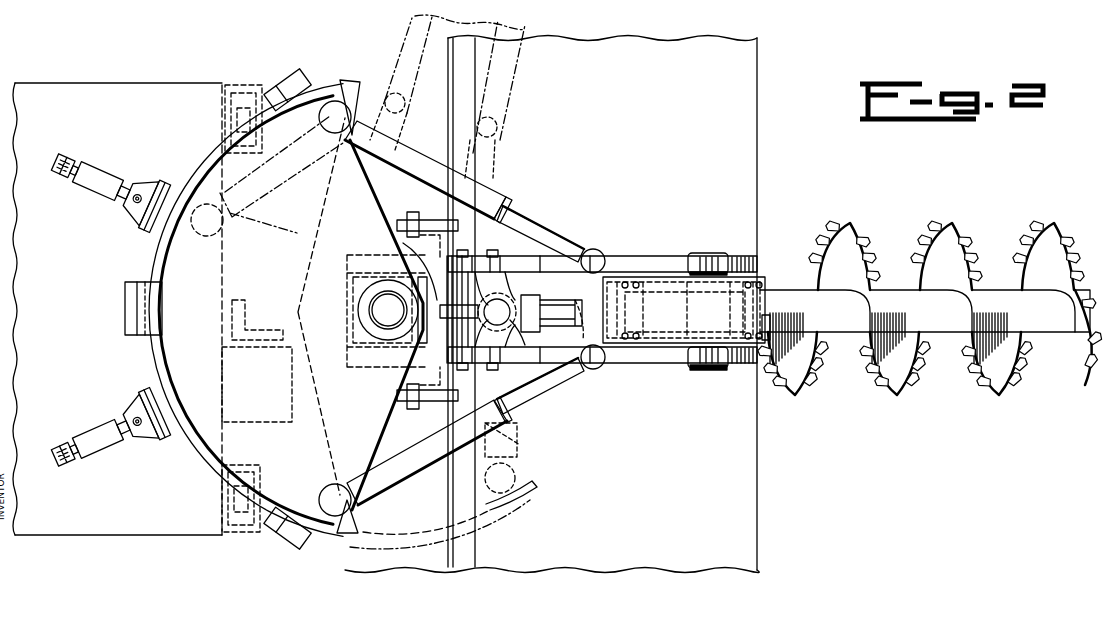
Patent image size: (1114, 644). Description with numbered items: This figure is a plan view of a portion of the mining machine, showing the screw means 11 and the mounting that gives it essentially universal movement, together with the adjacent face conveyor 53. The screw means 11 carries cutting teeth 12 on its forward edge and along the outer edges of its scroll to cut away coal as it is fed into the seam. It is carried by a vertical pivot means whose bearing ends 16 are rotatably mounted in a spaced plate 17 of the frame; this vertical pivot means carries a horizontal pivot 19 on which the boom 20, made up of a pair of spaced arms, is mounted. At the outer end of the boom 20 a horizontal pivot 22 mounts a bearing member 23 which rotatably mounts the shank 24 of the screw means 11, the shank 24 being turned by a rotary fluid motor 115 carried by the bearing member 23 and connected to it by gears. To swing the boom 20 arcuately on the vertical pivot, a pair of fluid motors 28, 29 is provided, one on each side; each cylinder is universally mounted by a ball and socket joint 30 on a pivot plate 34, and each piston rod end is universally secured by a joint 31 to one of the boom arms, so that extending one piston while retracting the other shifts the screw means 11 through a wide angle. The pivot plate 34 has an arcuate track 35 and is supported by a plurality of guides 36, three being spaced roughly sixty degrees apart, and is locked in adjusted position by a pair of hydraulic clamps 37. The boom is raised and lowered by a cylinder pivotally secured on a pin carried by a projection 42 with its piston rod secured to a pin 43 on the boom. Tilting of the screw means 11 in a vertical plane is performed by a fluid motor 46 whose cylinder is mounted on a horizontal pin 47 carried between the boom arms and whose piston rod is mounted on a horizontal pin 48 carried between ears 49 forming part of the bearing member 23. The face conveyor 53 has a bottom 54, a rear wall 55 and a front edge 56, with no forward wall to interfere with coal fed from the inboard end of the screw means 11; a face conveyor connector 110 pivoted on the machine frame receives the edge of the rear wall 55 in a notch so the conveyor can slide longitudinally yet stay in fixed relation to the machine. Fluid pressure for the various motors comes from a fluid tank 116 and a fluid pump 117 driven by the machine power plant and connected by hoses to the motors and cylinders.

The screw means 11 is at (950, 248).
The cutting teeth 12 is at (1040, 250).
The bearing ends 16 is at (375, 311).
The spaced plate 17 is at (380, 9).
The horizontal pivot 19 is at (367, 254).
The boom 20 is at (395, 50).
The horizontal pivot 22 is at (712, 372).
The bearing member 23 is at (675, 340).
The shank 24 is at (675, 283).
The fluid motor 28 is at (415, 468).
The fluid motor 29 is at (415, 150).
The ball and socket joint 30 is at (333, 102).
The joint 31 is at (392, 95).
The pivot plate 34 is at (215, 182).
The arcuate track 35 is at (213, 155).
The guides 36 is at (285, 78).
The hydraulic clamps 37 is at (150, 225).
The projection 42 is at (431, 292).
The pin 43 is at (470, 280).
The fluid motor 46 is at (488, 303).
The horizontal pin 47 is at (500, 268).
The horizontal pin 48 is at (530, 364).
The ears 49 is at (560, 315).
The face conveyor 53 is at (772, 63).
The bottom 54 is at (741, 117).
The rear wall 55 is at (468, 77).
The front edge 56 is at (766, 175).
The face conveyor connector 110 is at (435, 218).
The rotary fluid motor 115 is at (583, 365).
The fluid tank 116 is at (331, 454).
The fluid pump 117 is at (300, 404).